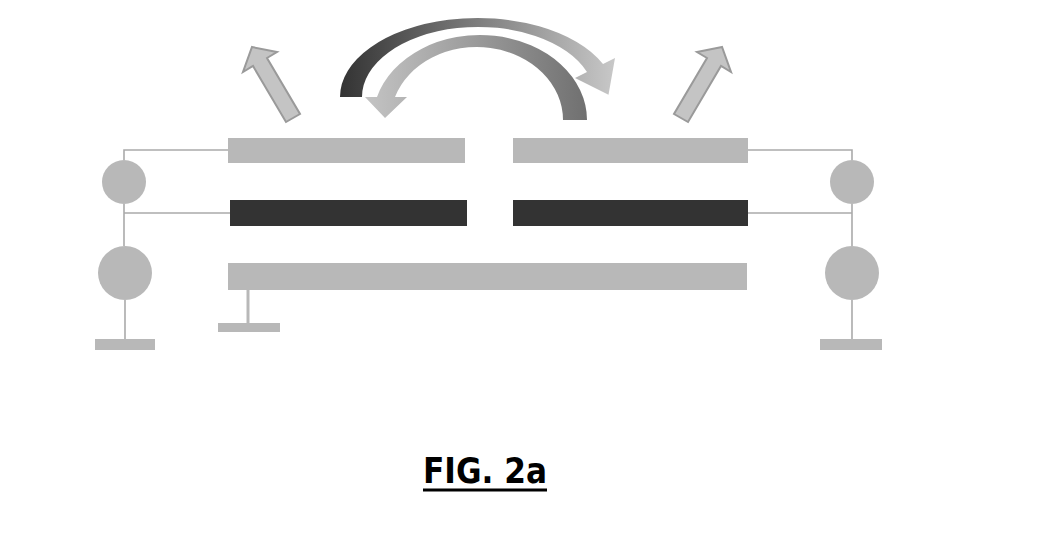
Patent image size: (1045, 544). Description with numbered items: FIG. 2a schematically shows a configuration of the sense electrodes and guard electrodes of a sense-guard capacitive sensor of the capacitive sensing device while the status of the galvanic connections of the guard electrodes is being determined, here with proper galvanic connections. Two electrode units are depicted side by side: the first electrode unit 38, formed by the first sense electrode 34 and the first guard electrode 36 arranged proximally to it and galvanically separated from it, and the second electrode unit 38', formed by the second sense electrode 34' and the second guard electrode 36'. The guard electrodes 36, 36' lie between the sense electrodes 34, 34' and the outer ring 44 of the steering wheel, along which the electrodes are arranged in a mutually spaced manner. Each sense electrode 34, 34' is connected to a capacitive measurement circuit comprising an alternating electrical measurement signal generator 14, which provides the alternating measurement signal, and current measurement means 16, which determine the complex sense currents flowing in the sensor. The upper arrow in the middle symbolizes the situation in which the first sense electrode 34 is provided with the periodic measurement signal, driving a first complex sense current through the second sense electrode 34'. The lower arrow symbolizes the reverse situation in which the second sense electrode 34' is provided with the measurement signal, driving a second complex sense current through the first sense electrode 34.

The alternating electrical measurement signal generator 14 is at (102, 268).
The current measurement means 16 is at (103, 172).
The first sense electrode 34 is at (346, 118).
The second sense electrode 34' is at (630, 118).
The first guard electrode 36 is at (348, 232).
The second guard electrode 36' is at (630, 232).
The first electrode unit 38 is at (239, 66).
The second electrode unit 38' is at (743, 70).
The outer ring 44 is at (492, 278).